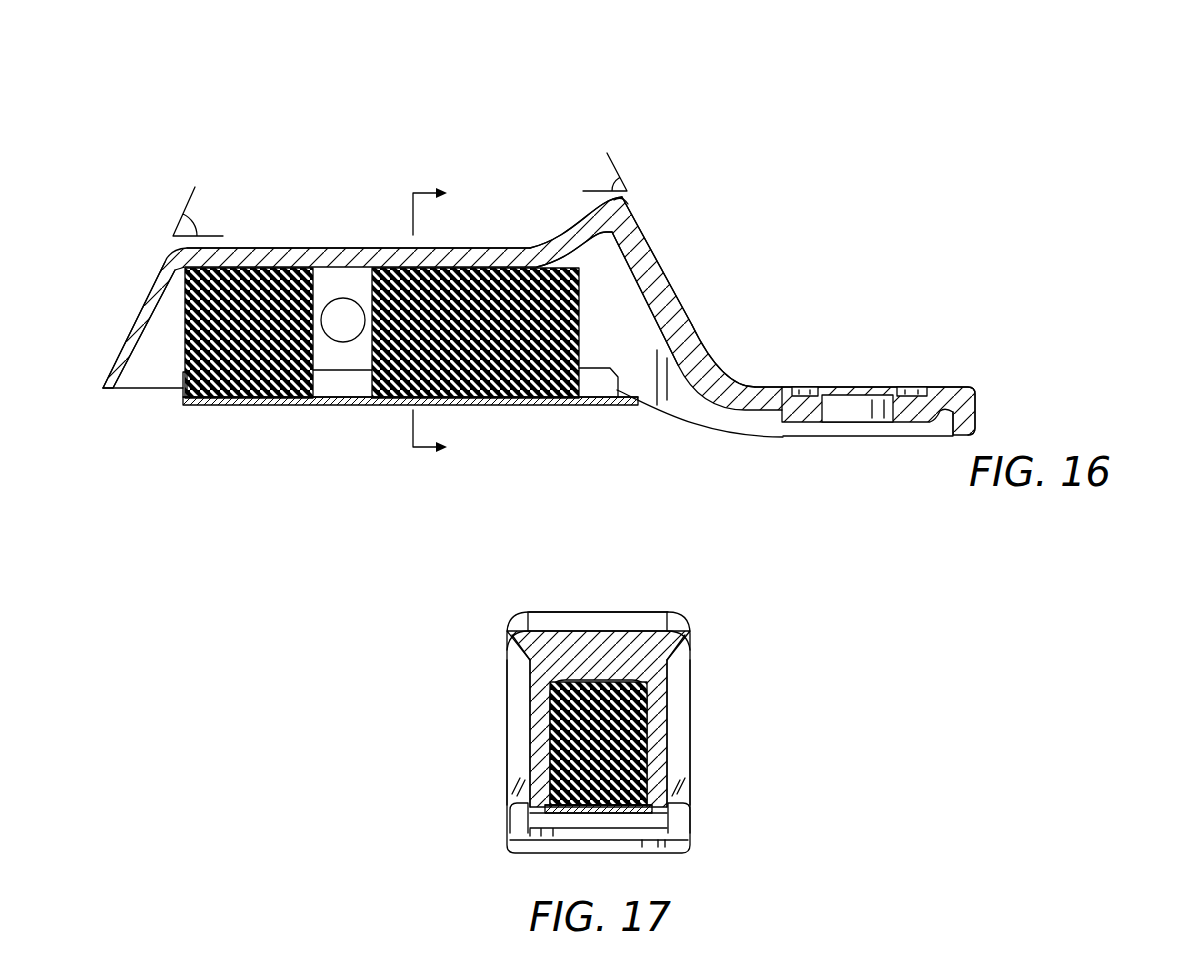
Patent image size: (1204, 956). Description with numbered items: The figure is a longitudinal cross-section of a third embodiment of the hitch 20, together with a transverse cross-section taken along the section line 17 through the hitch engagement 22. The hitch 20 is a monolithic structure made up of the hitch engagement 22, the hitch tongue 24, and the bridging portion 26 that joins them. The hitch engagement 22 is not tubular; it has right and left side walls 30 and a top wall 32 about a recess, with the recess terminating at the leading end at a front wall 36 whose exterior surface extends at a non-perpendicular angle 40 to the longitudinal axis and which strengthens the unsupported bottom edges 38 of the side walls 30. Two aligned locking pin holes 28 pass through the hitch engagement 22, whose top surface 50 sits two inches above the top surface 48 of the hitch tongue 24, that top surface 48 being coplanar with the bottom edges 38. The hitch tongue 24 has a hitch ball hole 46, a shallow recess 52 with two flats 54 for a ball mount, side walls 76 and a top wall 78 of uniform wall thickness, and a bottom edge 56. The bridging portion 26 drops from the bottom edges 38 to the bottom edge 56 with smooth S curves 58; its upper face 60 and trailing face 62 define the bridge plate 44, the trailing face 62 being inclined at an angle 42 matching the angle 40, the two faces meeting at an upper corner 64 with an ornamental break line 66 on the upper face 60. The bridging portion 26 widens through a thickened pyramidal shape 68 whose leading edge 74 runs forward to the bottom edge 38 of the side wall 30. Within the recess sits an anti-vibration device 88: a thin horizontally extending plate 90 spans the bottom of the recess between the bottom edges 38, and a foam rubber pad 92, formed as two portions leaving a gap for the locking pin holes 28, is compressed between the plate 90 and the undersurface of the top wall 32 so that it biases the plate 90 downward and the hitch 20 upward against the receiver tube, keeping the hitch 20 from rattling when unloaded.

In FIG. 16, the hitch 20 is at (273, 140).
In FIG. 16, the hitch engagement 22 is at (293, 248).
In FIG. 17, the hitch engagement 22 is at (552, 651).
In FIG. 16, the hitch tongue 24 is at (949, 388).
In FIG. 16, the bridging portion 26 is at (683, 292).
In FIG. 16, the locking pin holes 28 is at (328, 334).
In FIG. 16, the side walls 30 is at (347, 357).
In FIG. 17, the side walls 30 is at (540, 718).
In FIG. 16, the top wall 32 is at (310, 258).
In FIG. 17, the top wall 32 is at (622, 667).
In FIG. 16, the front wall 36 is at (140, 340).
In FIG. 16, the bottom edges 38 is at (157, 392).
In FIG. 16, the angle of front wall 40 is at (197, 222).
In FIG. 16, the angle of trailing surface 42 is at (612, 184).
In FIG. 16, the bridge plate 44 is at (640, 243).
In FIG. 16, the hitch ball hole 46 is at (843, 406).
In FIG. 16, the top surface of hitch tongue 48 is at (783, 386).
In FIG. 16, the top surface of hitch engagement 50 is at (463, 246).
In FIG. 16, the recess 52 is at (803, 388).
In FIG. 16, the flats 54 is at (873, 389).
In FIG. 16, the bottom edge of hitch tongue 56 is at (827, 437).
In FIG. 17, the bottom edge of hitch tongue 56 is at (550, 855).
In FIG. 16, the S curves 58 is at (608, 405).
In FIG. 17, the S curves 58 is at (518, 821).
In FIG. 16, the upper face 60 is at (605, 202).
In FIG. 17, the upper face 60 is at (590, 620).
In FIG. 16, the trailing face 62 is at (673, 283).
In FIG. 16, the upper corner 64 is at (628, 197).
In FIG. 17, the upper corner 64 is at (552, 612).
In FIG. 16, the break line 66 is at (603, 206).
In FIG. 17, the break line 66 is at (628, 627).
In FIG. 17, the pyramidal shape 68 is at (520, 770).
In FIG. 17, the leading edge 74 is at (516, 788).
In FIG. 16, the side walls of hitch tongue 76 is at (782, 432).
In FIG. 17, the side walls of hitch tongue 76 is at (516, 850).
In FIG. 16, the top wall of hitch tongue 78 is at (768, 398).
In FIG. 16, the anti-vibration device 88 is at (281, 404).
In FIG. 17, the anti-vibration device 88 is at (575, 813).
In FIG. 16, the plate 90 is at (470, 405).
In FIG. 17, the plate 90 is at (611, 810).
In FIG. 16, the foam rubber pad 92 is at (535, 405).
In FIG. 17, the foam rubber pad 92 is at (586, 810).
In FIG. 16, the section line 17 is at (428, 323).